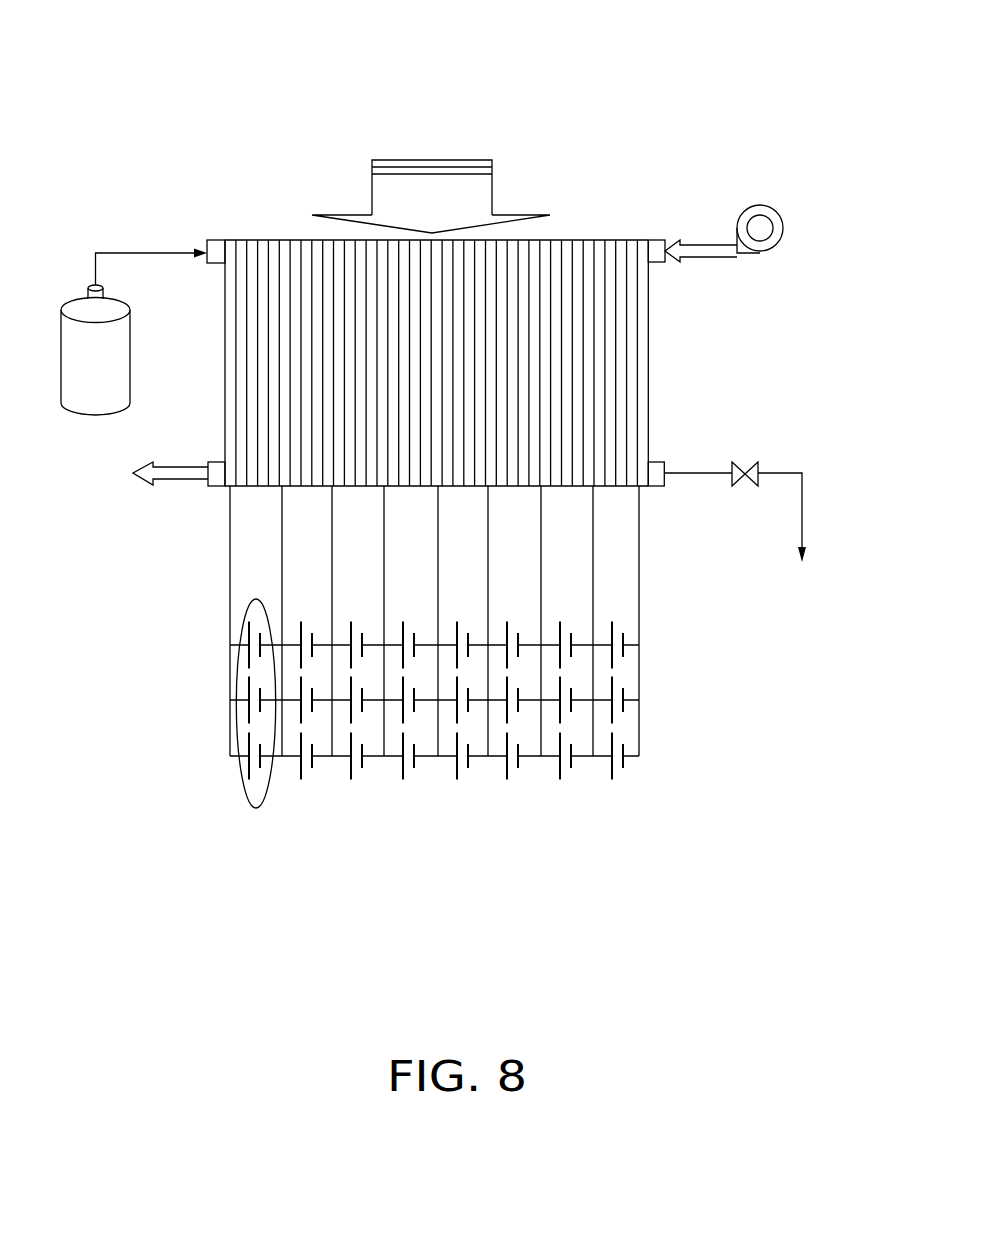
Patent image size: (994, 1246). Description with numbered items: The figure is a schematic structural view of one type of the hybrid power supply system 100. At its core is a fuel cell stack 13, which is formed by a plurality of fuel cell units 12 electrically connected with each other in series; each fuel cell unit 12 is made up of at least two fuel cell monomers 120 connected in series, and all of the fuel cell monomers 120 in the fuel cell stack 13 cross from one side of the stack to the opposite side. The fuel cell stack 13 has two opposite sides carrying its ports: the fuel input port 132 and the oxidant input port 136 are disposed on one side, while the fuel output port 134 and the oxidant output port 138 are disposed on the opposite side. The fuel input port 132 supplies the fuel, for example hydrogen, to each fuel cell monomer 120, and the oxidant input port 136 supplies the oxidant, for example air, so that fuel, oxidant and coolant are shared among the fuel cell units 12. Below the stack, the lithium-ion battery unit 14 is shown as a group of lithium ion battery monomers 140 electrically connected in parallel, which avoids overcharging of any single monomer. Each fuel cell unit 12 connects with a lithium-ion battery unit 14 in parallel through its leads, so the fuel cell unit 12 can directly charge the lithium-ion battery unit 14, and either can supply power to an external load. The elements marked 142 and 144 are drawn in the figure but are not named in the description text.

The hybrid power supply system 100 is at (334, 53).
The fuel cell unit 12 is at (287, 237).
The fuel cell stack 13 is at (430, 392).
The fuel cell monomer 120 is at (243, 380).
The fuel input port 132 is at (212, 248).
The fuel output port 134 is at (655, 473).
The oxidant input port 136 is at (218, 462).
The oxidant output port 138 is at (657, 262).
The lithium ion battery monomer 140 is at (248, 712).
The tube 142 is at (228, 562).
The connecting tube 144 is at (280, 580).
The lithium-ion battery unit 14 is at (242, 792).